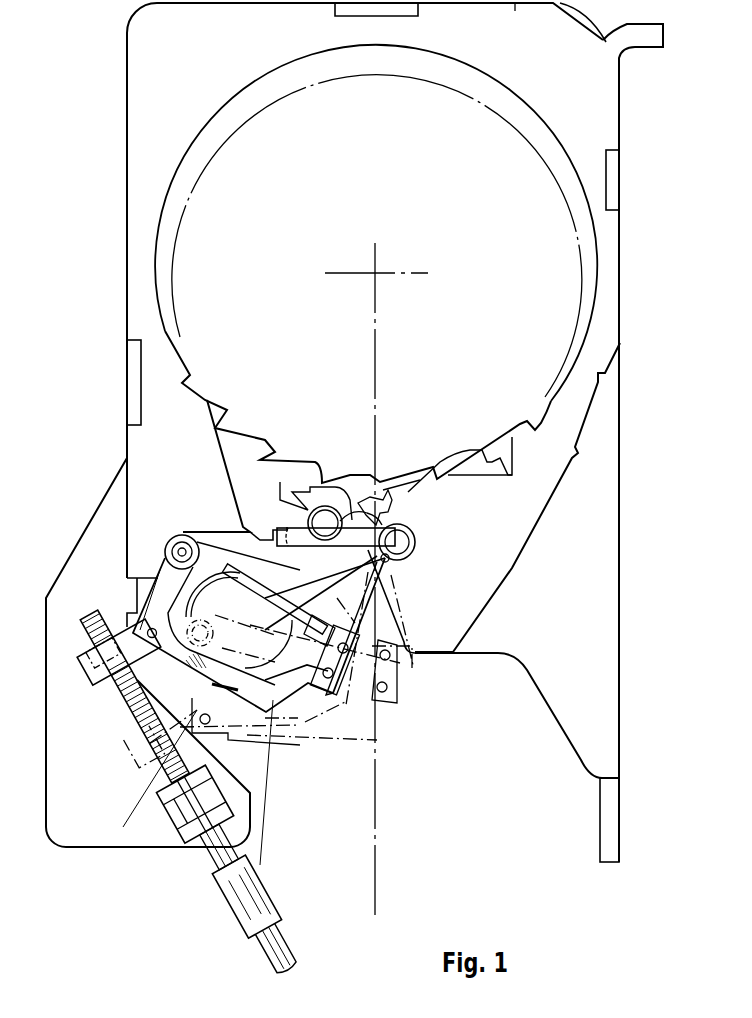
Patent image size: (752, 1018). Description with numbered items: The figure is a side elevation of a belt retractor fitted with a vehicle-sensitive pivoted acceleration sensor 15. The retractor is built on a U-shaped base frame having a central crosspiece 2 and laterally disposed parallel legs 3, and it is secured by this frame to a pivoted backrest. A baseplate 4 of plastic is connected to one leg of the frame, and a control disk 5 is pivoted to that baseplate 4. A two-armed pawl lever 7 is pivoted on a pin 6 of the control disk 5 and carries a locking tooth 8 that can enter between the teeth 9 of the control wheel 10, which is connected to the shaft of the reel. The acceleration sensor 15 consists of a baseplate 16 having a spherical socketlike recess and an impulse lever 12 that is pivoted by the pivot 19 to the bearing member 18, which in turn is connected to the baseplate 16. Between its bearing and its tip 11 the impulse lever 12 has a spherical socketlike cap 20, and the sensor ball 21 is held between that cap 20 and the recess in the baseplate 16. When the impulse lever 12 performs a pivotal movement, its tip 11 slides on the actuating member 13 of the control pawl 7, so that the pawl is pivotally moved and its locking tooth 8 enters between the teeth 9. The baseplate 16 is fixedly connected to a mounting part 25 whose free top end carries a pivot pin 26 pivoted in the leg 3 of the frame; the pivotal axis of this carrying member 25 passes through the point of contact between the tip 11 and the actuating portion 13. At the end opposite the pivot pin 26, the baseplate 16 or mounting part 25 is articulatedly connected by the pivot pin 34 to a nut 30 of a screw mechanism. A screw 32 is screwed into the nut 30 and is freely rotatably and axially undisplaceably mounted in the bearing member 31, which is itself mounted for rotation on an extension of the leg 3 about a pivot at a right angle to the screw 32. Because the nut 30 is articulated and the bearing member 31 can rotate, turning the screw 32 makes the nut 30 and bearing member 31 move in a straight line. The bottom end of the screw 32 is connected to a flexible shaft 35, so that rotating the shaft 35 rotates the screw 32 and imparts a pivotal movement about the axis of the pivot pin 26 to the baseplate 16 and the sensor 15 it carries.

The central crosspiece 2 is at (621, 408).
The leg 3 is at (518, 652).
The baseplate 4 is at (520, 545).
The control disk 5 is at (236, 470).
The pin 6 is at (330, 505).
The pawl lever 7 is at (383, 495).
The locking tooth 8 is at (398, 510).
The teeth 9 is at (452, 470).
The control wheel 10 is at (183, 270).
The tip 11 is at (398, 562).
The impulse lever 12 is at (388, 612).
The actuating member 13 is at (413, 535).
The vehicle-sensitive acceleration sensor 15 is at (155, 588).
The baseplate 16 is at (240, 735).
The bearing member 18 is at (153, 593).
The pivot 19 is at (182, 548).
The spherical socketlike cap 20 is at (268, 600).
The sensor ball 21 is at (239, 608).
The mounting part 25 is at (386, 586).
The pivot pin 26 is at (405, 550).
The nut 30 is at (90, 690).
The bearing member 31 is at (175, 828).
The screw 32 is at (130, 708).
The pivot pin 34 is at (153, 640).
The flexible shaft 35 is at (292, 948).